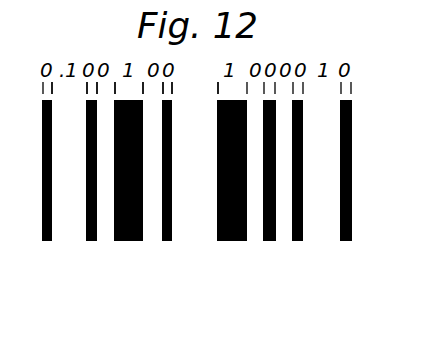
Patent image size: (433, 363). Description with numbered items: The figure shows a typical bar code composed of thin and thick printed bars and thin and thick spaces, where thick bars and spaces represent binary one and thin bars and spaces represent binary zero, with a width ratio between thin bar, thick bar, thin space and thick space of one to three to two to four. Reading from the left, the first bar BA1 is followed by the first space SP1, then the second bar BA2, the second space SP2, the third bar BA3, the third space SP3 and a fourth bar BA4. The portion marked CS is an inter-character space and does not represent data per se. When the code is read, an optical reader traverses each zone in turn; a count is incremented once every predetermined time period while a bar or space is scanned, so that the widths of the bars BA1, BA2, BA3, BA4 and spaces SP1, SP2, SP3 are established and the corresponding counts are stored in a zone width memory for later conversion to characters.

The first bar BA1 is at (47, 241).
The first space SP1 is at (67, 233).
The second bar BA2 is at (90, 241).
The second space SP2 is at (107, 233).
The third bar BA3 is at (133, 241).
The third space SP3 is at (153, 233).
The fourth bar BA4 is at (170, 241).
The inter-character space CS is at (203, 233).